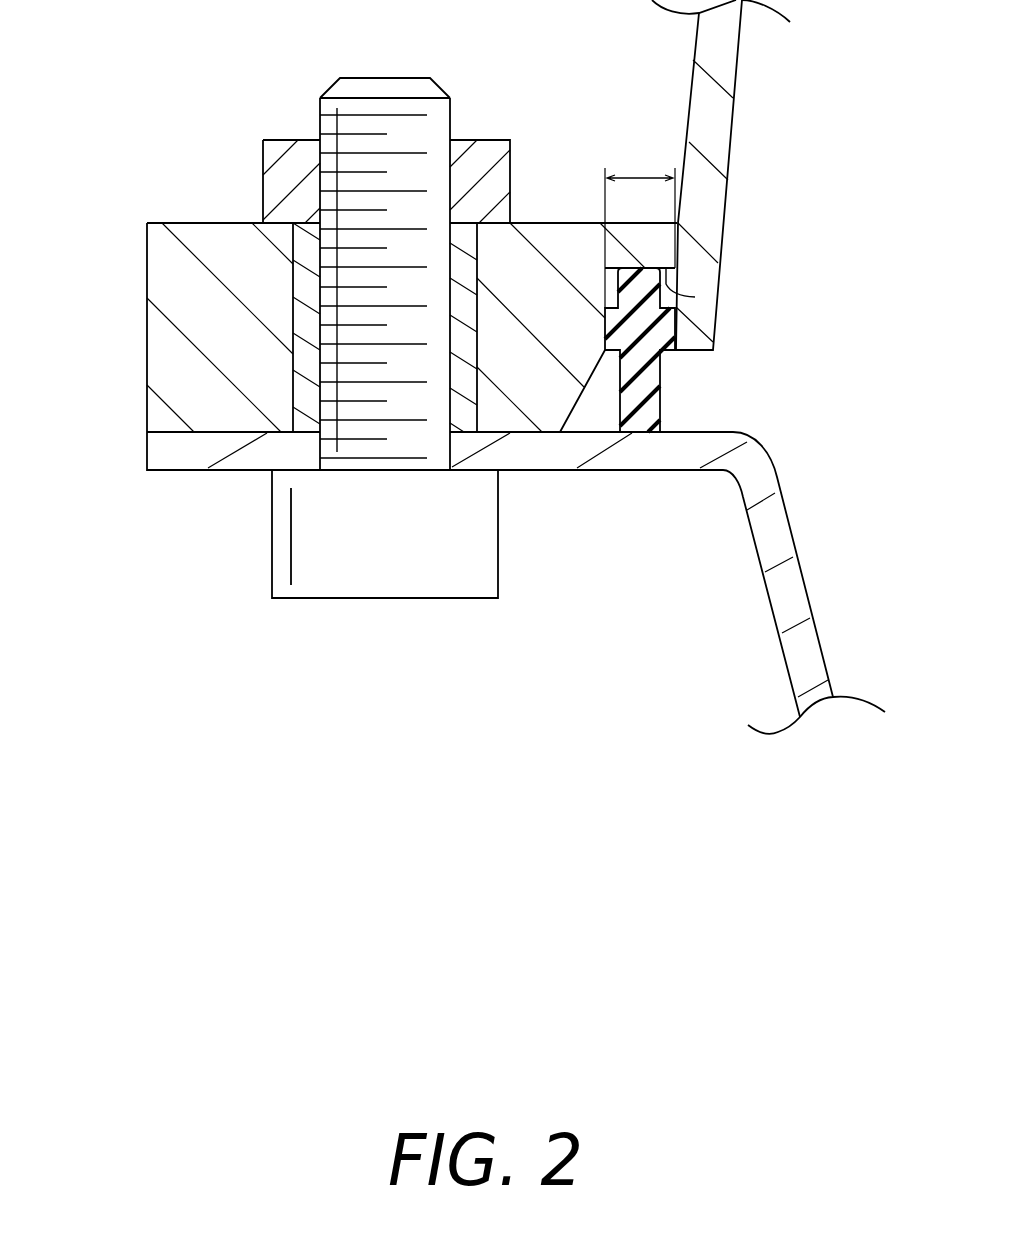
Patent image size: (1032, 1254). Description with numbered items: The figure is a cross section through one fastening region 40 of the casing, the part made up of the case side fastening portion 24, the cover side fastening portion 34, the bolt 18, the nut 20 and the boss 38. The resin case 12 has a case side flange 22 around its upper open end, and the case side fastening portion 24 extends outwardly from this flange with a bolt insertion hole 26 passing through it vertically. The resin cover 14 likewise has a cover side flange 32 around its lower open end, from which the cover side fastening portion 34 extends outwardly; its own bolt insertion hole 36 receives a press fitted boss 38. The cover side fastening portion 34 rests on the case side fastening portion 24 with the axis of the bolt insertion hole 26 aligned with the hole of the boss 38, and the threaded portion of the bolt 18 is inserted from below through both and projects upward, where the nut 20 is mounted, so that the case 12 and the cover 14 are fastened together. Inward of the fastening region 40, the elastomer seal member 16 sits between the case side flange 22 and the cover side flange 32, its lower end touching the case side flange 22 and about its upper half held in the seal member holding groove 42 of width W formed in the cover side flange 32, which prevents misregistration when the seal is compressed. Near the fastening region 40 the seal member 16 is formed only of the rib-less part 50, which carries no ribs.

The case 12 is at (803, 575).
The cover 14 is at (738, 75).
The seal member 16 is at (652, 407).
The rib-less part 50 is at (640, 350).
The bolt 18 is at (355, 598).
The nut 20 is at (262, 165).
The case side flange 22 is at (562, 470).
The case side fastening portion 24 is at (146, 452).
The bolt insertion hole 26 is at (447, 443).
The cover side flange 32 is at (543, 220).
The cover side fastening portion 34 is at (146, 335).
The bolt insertion hole 36 is at (295, 272).
The boss 38 is at (463, 232).
The fastening region 40 is at (132, 159).
The seal member holding groove 42 is at (668, 285).